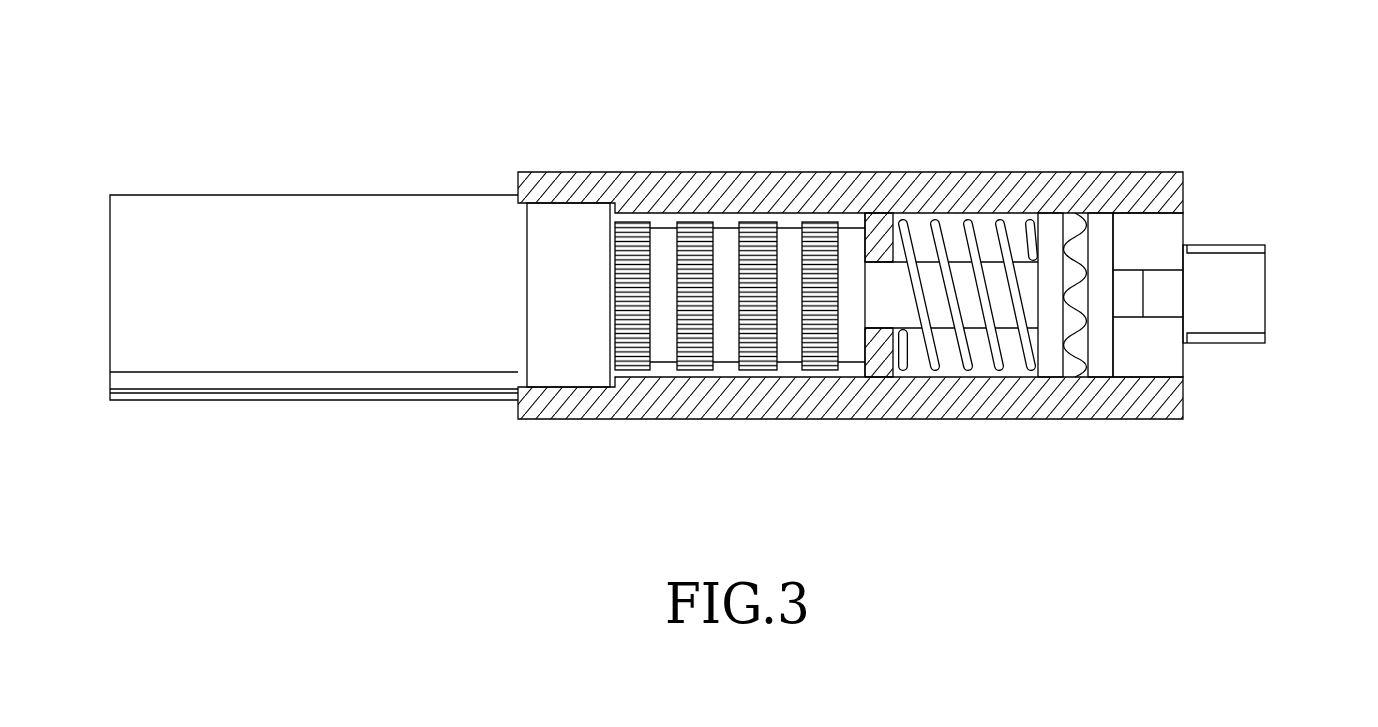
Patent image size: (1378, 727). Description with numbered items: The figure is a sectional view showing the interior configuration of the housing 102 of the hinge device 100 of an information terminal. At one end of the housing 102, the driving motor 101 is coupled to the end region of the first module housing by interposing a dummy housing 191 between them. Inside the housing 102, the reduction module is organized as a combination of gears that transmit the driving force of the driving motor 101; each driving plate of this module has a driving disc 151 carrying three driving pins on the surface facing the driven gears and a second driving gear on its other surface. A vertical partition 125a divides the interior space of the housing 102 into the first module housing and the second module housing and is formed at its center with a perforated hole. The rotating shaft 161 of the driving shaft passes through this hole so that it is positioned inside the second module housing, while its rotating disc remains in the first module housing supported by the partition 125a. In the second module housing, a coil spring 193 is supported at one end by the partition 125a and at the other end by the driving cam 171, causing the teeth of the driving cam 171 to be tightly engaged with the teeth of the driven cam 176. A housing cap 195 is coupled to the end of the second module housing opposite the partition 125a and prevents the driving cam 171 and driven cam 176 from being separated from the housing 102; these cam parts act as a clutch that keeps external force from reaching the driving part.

The hinge device 100 is at (786, 39).
The driving motor 101 is at (322, 217).
The housing 102 is at (730, 400).
The dummy housing 191 is at (572, 222).
The driving disc 151 is at (659, 238).
The partition 125a is at (880, 216).
The rotating shaft 161 is at (886, 322).
The coil spring 193 is at (1000, 226).
The driving cam 171 is at (1050, 362).
The housing cap 195 is at (1147, 228).
The driven cam 176 is at (1270, 294).